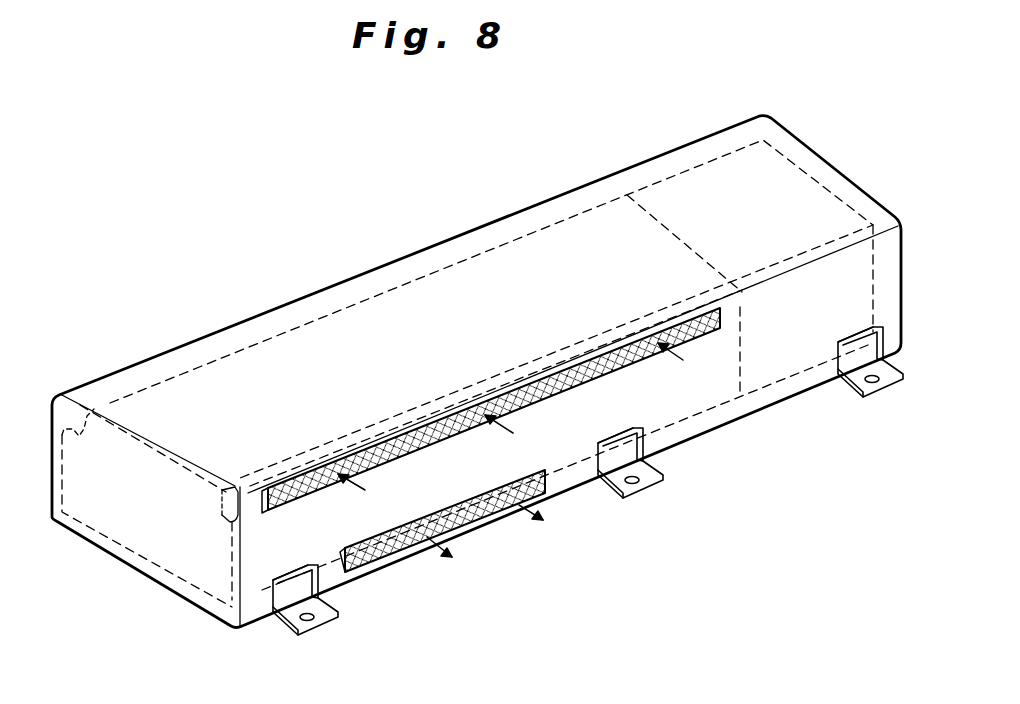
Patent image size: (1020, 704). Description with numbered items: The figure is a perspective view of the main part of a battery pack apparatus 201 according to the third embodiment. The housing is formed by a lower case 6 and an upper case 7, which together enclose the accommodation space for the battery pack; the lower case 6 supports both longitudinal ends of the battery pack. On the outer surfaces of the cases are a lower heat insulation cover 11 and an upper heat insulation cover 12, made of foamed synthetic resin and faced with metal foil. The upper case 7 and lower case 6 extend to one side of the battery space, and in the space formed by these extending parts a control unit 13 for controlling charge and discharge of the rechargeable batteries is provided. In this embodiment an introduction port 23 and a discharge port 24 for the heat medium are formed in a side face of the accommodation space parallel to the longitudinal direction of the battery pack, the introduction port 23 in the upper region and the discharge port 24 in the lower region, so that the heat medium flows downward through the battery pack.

The battery pack apparatus 201 is at (297, 284).
The upper heat insulation cover 12 is at (157, 363).
The control unit 13 is at (707, 185).
The upper case 7 is at (124, 410).
The lower case 6 is at (119, 537).
The lower heat insulation cover 11 is at (168, 600).
The introduction port 23 is at (517, 413).
The discharge port 24 is at (488, 528).